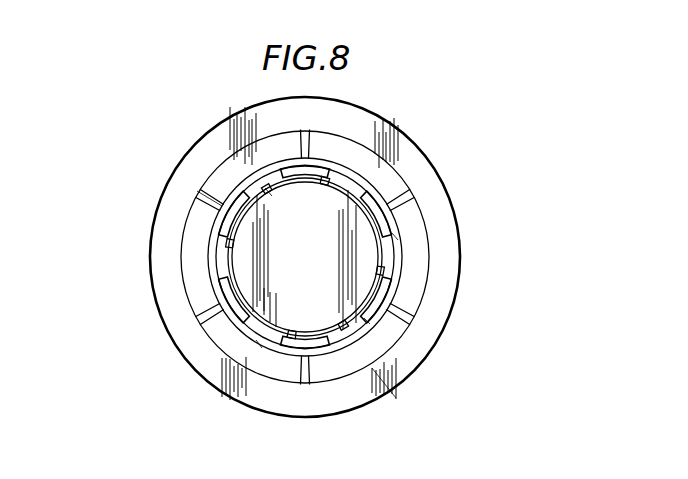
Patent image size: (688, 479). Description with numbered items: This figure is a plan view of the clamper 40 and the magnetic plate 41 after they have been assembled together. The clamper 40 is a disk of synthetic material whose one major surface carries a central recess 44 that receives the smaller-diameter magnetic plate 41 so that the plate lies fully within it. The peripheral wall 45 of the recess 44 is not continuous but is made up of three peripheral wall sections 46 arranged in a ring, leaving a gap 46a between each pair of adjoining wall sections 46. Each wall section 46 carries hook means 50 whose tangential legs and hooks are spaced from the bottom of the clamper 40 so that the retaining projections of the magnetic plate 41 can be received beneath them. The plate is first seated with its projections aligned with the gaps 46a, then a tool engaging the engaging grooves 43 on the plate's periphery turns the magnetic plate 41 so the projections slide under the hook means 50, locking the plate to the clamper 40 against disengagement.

The clamper 40 is at (431, 182).
The magnetic plate 41 is at (218, 246).
The engaging grooves 43 is at (236, 262).
The recess 44 is at (362, 322).
The peripheral wall 45 is at (242, 198).
The peripheral wall sections 46 is at (358, 196).
The gap 46a is at (400, 272).
The hook means 50 is at (257, 190).